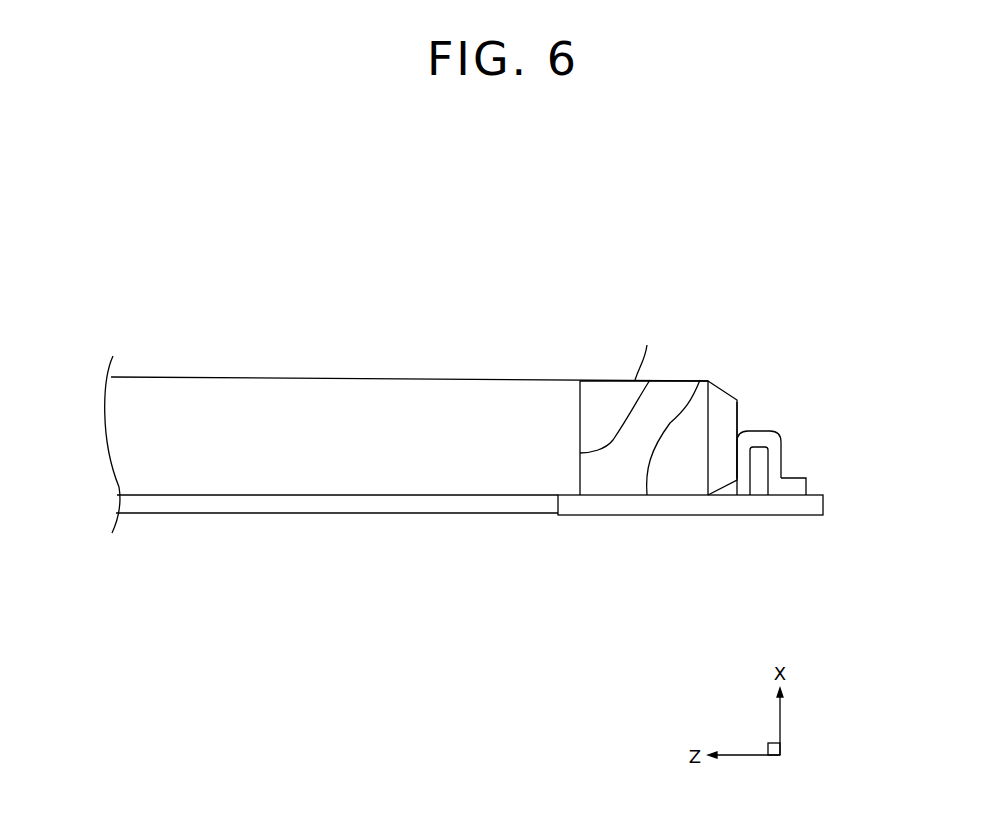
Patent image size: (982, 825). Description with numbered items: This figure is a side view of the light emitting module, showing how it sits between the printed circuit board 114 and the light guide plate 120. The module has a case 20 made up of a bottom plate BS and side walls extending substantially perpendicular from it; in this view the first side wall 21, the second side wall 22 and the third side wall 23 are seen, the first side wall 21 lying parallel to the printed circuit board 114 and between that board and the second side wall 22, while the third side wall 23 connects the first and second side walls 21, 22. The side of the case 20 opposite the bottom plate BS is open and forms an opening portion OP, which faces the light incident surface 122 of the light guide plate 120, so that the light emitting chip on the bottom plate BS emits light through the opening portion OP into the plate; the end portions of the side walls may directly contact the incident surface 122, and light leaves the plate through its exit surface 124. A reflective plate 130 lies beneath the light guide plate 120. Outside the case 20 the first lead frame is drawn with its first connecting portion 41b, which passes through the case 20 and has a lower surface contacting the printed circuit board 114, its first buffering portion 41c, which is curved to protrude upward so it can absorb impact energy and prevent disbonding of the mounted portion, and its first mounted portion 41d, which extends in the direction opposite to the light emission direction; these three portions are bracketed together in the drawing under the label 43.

The light guide plate 120 is at (567, 313).
The exit surface 124 is at (490, 377).
The light incident surface 122 is at (580, 423).
The reflective plate 130 is at (478, 505).
The printed circuit board 114 is at (597, 505).
The case 20 is at (593, 313).
The third side wall 23 is at (601, 424).
The second side wall 22 is at (635, 380).
The opening portion OP is at (650, 380).
The first side wall 21 is at (700, 380).
The bottom plate BS is at (740, 412).
The coupling member 43 is at (682, 562).
The first connecting portion 41b is at (735, 497).
The first buffering portion 41c is at (759, 447).
The first mounted portion 41d is at (789, 490).